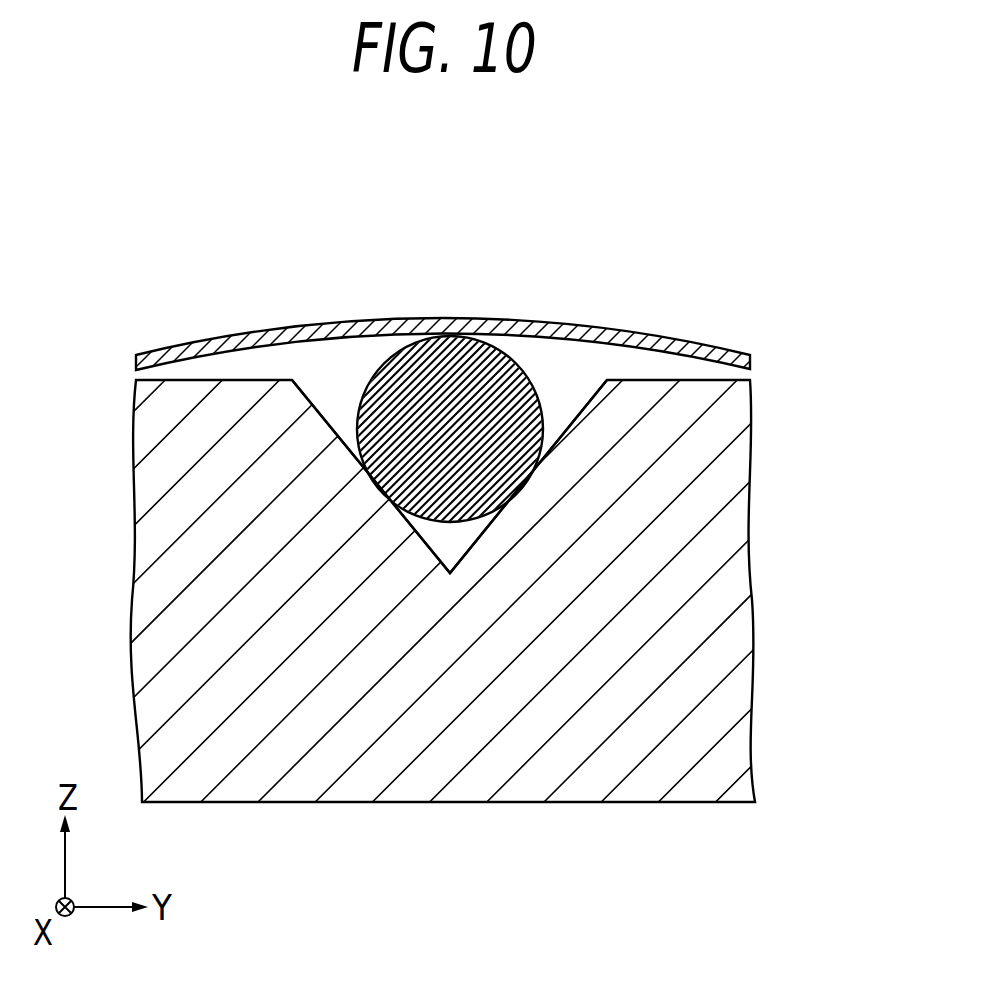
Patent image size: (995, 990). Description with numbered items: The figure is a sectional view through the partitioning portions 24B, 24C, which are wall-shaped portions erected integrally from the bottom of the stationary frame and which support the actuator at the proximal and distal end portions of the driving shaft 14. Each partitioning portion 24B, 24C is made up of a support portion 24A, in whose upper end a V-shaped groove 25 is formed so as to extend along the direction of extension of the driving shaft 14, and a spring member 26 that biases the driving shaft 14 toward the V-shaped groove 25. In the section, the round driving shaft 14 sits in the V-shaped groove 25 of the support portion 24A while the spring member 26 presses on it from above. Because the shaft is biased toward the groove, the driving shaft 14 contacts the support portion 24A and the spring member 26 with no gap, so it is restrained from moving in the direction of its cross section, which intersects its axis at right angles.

The driving shaft 14 is at (387, 400).
The support portion 24A is at (764, 562).
The partitioning portion 24B is at (212, 277).
The partitioning portion 24C is at (497, 488).
The V-shaped groove 25 is at (558, 423).
The spring member 26 is at (690, 352).